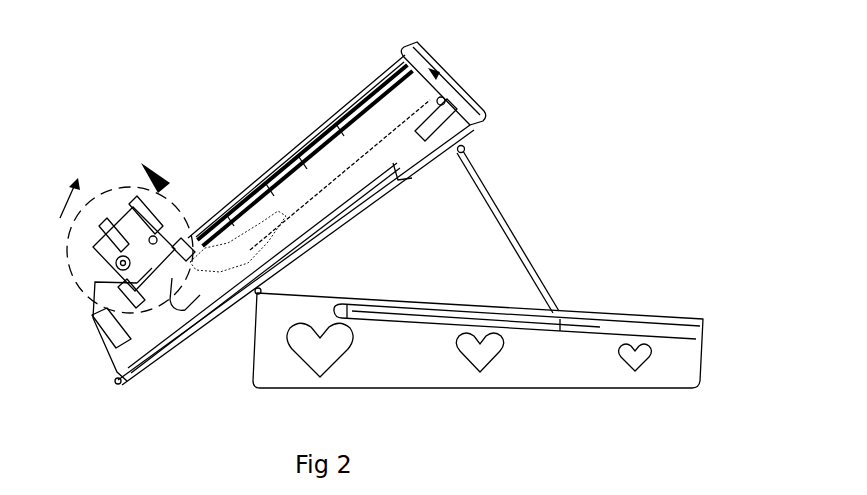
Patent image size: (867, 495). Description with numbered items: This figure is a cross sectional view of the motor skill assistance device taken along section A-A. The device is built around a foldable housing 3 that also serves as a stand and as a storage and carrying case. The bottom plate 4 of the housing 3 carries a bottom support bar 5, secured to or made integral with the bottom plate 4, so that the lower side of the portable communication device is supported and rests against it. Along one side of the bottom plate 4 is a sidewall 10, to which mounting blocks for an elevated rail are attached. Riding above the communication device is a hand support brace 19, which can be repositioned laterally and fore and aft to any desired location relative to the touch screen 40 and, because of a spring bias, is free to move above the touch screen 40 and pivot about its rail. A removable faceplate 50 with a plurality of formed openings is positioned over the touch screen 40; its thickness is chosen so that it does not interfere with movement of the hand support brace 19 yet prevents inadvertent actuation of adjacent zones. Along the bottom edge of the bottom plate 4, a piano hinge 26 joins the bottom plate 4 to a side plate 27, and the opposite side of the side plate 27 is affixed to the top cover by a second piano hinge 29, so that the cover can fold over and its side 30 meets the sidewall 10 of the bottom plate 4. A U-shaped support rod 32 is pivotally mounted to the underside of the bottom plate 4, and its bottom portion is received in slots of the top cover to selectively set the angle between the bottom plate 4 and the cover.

The foldable housing 3 is at (479, 91).
The bottom plate 4 is at (401, 187).
The bottom support bar 5 is at (178, 312).
The sidewall 10 is at (470, 148).
The hand support brace 19 is at (160, 197).
The piano hinge 26 is at (116, 383).
The side plate 27 is at (181, 348).
The second piano hinge 29 is at (257, 291).
The side of top cover 30 is at (482, 379).
The U-shaped support rod 32 is at (512, 221).
The touch screen 40 is at (343, 150).
The removable faceplate 50 is at (294, 163).